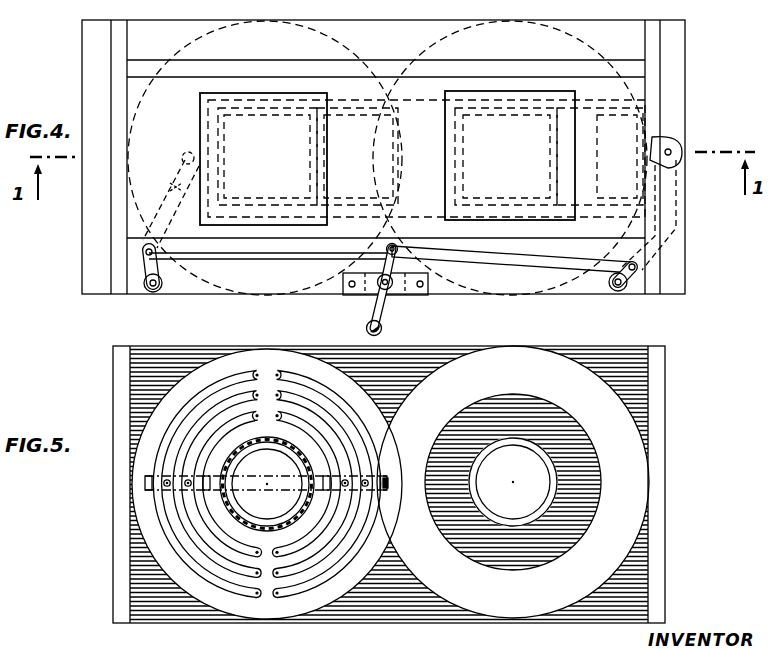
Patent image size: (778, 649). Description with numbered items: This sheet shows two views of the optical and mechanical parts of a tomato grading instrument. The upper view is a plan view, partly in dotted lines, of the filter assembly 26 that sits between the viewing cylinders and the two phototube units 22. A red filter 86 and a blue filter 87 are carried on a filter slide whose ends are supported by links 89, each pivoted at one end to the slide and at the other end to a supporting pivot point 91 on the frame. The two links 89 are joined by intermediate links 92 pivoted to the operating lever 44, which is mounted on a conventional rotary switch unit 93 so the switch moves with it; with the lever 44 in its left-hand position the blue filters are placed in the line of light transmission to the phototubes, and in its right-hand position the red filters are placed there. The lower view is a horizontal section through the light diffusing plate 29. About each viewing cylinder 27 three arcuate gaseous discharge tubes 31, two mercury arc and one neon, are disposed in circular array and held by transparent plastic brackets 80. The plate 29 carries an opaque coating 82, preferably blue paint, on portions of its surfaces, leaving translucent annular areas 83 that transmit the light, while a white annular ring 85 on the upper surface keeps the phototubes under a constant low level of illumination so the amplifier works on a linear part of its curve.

In FIG. 4, the phototube unit 22 is at (440, 154).
In FIG. 4, the filter assembly 26 is at (481, 98).
In FIG. 4, the red filter 86 is at (501, 102).
In FIG. 4, the blue filter 87 is at (637, 113).
In FIG. 4, the link 89 is at (169, 200).
In FIG. 4, the supporting pivot point 91 is at (163, 272).
In FIG. 4, the intermediate link 92 is at (283, 258).
In FIG. 4, the rotary switch unit 93 is at (372, 297).
In FIG. 4, the operating lever 44 is at (387, 305).
In FIG. 5, the light diffusing plate 29 is at (640, 346).
In FIG. 5, the viewing cylinder 27 is at (220, 489).
In FIG. 5, the gaseous discharge tube 31 is at (168, 532).
In FIG. 5, the bracket 80 is at (386, 478).
In FIG. 5, the translucent annular area 83 is at (620, 426).
In FIG. 5, the opaque coating 82 is at (590, 498).
In FIG. 5, the white annular ring 85 is at (534, 446).